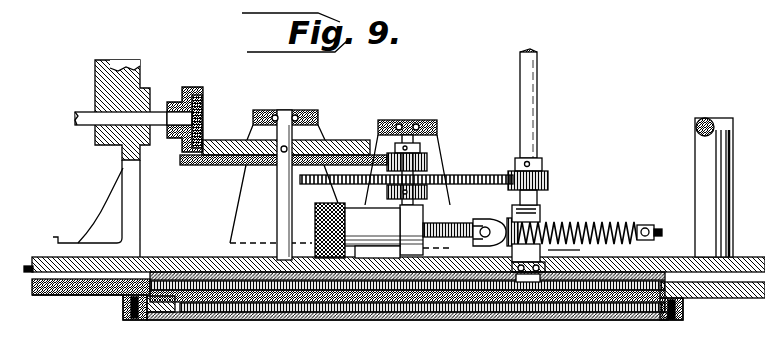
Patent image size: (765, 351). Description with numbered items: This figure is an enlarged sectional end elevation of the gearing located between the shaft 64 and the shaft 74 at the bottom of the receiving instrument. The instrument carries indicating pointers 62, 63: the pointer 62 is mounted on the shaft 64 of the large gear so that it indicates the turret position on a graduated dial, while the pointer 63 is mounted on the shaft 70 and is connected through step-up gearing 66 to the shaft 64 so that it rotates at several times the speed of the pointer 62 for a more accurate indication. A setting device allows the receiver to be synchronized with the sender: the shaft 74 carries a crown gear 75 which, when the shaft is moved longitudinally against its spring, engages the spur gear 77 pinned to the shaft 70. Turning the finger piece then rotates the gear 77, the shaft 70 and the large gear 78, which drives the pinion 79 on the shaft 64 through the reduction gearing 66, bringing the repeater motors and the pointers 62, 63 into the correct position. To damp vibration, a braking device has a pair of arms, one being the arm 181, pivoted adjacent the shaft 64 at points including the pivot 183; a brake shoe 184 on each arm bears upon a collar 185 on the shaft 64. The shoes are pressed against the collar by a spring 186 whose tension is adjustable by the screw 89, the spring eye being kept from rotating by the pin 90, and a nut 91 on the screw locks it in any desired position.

The indicating pointer 62 is at (494, 283).
The indicating pointer 63 is at (246, 306).
The shaft 64 is at (539, 91).
The step-up gearing 66 is at (447, 177).
The shaft 70 is at (282, 196).
The shaft 74 is at (86, 111).
The crown gear 75 is at (187, 94).
The spur gear 77 is at (329, 148).
The large gear 78 is at (229, 163).
The pinion 79 is at (552, 179).
The screw 89 is at (408, 187).
The pin 90 is at (481, 220).
The nut 91 is at (357, 230).
The arm 181 is at (652, 231).
The pivot 183 is at (565, 256).
The brake shoe 184 is at (512, 252).
The collar 185 is at (511, 219).
The spring 186 is at (600, 224).